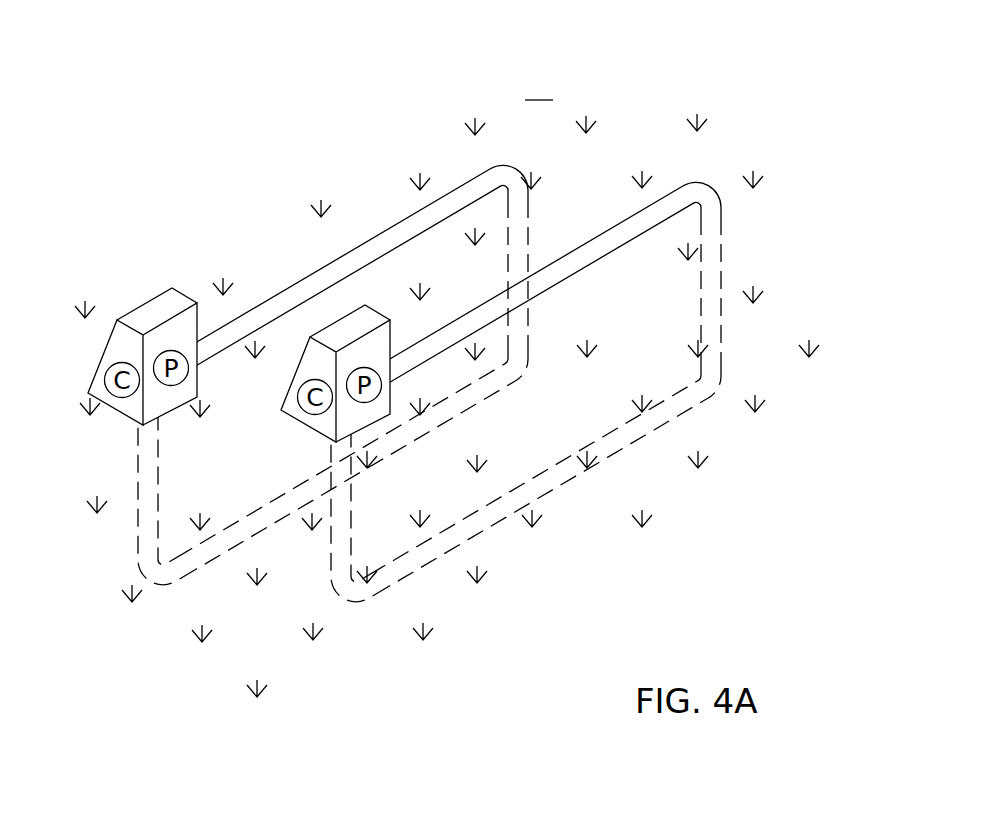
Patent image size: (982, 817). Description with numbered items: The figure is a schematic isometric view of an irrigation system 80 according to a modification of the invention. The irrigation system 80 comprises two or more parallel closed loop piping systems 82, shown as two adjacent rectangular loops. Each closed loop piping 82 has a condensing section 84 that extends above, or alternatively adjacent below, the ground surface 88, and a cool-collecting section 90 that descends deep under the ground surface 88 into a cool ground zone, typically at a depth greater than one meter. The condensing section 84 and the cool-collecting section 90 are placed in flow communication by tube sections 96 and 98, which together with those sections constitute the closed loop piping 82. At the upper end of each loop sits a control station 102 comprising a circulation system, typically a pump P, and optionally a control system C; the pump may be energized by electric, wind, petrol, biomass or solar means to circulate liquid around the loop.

The irrigation system 80 is at (404, 346).
The closed loop piping system 82 is at (600, 115).
The condensing section 84 is at (490, 308).
The ground surface 88 is at (539, 89).
The cool-collecting section 90 is at (533, 488).
The tube section 96 is at (345, 464).
The tube section 98 is at (518, 343).
The control station 102 is at (343, 332).